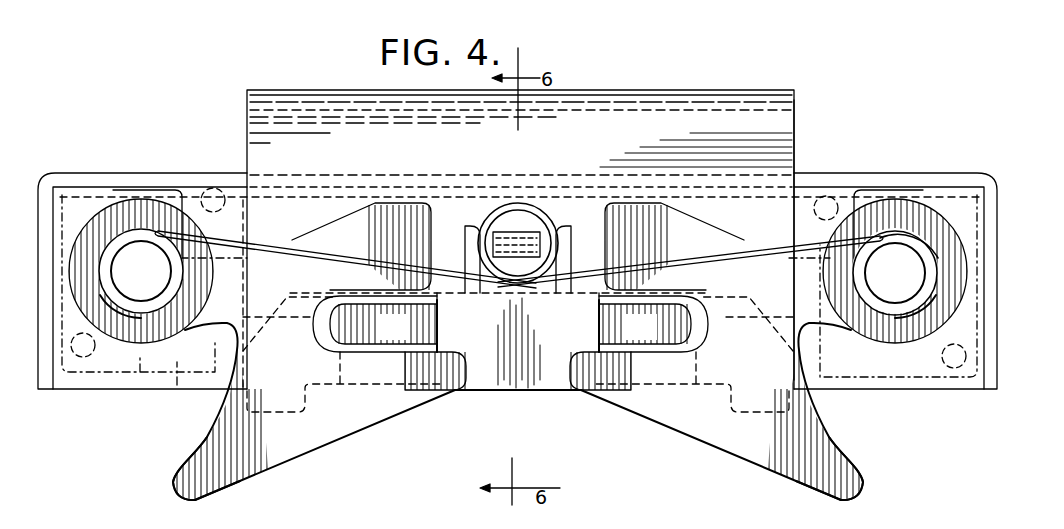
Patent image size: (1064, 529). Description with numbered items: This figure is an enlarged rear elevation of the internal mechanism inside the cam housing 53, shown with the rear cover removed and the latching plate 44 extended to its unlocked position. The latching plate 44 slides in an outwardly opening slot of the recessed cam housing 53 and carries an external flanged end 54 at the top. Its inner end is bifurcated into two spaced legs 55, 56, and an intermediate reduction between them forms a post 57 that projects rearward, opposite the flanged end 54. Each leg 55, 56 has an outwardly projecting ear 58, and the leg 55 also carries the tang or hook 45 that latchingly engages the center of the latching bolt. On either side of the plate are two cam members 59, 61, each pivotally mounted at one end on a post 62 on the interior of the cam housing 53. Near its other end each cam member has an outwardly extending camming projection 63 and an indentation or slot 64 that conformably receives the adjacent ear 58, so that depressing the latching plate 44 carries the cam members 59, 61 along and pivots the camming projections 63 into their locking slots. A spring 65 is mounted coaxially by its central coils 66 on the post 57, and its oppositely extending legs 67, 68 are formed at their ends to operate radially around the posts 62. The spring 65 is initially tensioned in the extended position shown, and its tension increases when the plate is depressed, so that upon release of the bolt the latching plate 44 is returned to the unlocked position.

The latching plate 44 is at (795, 150).
The tang or hook 45 is at (559, 386).
The cam housing 53 is at (880, 176).
The external flanged end 54 is at (786, 102).
The leg 55 is at (438, 331).
The leg 56 is at (598, 327).
The post 57 is at (519, 242).
The ear 58 is at (406, 338).
The cam member 59 is at (306, 456).
The cam member 61 is at (727, 457).
The post 62 is at (142, 258).
The camming projection 63 is at (178, 467).
The indentation or slot 64 is at (321, 332).
The spring 65 is at (582, 262).
The central coils 66 is at (503, 209).
The spring leg 67 is at (110, 233).
The spring leg 68 is at (930, 242).